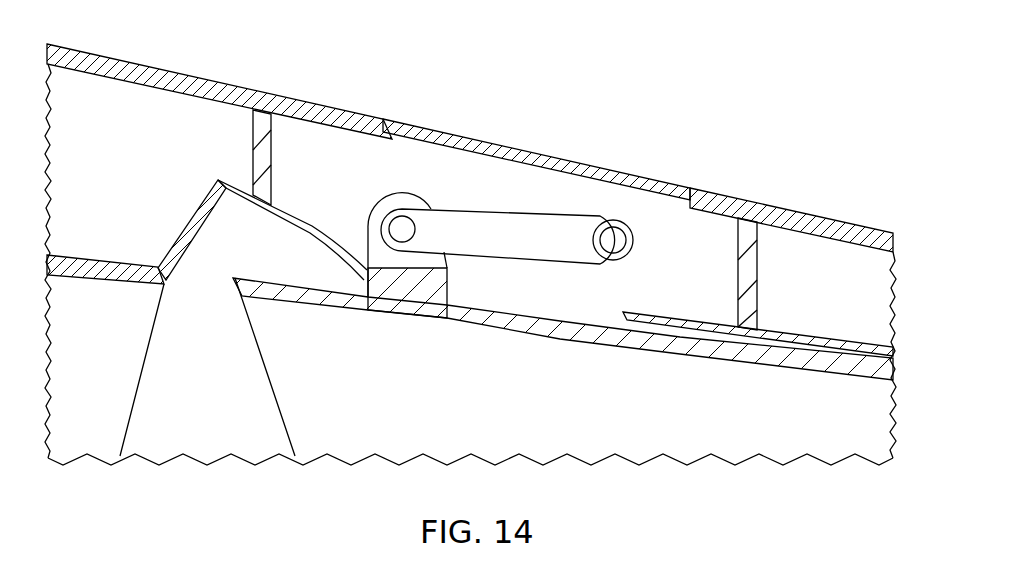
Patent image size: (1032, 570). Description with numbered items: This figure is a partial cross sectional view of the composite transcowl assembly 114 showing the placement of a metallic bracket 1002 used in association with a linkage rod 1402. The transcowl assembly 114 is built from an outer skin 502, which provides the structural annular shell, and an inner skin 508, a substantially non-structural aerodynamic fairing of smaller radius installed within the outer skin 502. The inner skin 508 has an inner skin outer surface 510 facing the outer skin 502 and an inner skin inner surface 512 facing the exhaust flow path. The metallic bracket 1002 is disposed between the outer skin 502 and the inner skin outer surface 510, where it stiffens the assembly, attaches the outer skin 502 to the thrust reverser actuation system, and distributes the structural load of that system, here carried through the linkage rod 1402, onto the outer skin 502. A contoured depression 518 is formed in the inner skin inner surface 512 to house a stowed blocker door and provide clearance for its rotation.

The composite transcowl assembly 114 is at (343, 111).
The metallic bracket 1002 is at (582, 180).
The outer skin 502 is at (738, 212).
The inner skin inner surface 512 is at (280, 228).
The inner skin outer surface 510 is at (200, 203).
The inner skin 508 is at (118, 264).
The contoured depression 518 is at (252, 411).
The linkage rod 1402 is at (478, 218).